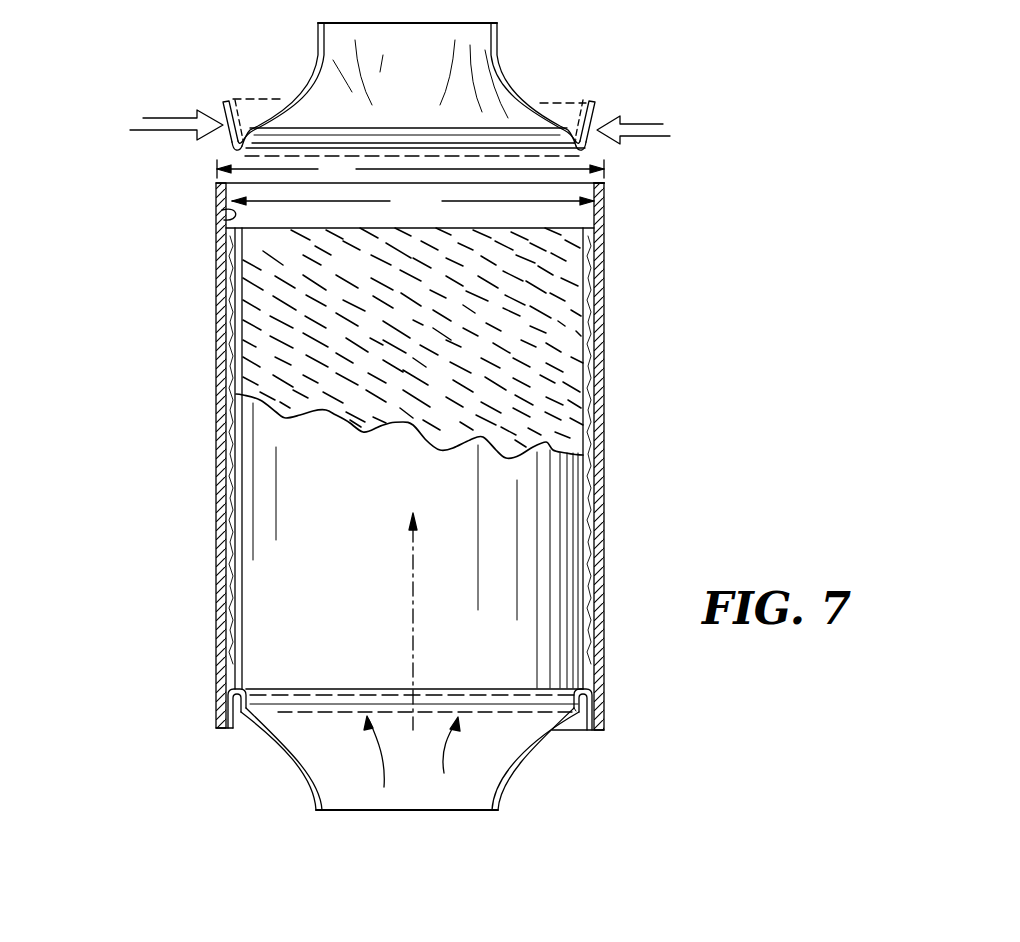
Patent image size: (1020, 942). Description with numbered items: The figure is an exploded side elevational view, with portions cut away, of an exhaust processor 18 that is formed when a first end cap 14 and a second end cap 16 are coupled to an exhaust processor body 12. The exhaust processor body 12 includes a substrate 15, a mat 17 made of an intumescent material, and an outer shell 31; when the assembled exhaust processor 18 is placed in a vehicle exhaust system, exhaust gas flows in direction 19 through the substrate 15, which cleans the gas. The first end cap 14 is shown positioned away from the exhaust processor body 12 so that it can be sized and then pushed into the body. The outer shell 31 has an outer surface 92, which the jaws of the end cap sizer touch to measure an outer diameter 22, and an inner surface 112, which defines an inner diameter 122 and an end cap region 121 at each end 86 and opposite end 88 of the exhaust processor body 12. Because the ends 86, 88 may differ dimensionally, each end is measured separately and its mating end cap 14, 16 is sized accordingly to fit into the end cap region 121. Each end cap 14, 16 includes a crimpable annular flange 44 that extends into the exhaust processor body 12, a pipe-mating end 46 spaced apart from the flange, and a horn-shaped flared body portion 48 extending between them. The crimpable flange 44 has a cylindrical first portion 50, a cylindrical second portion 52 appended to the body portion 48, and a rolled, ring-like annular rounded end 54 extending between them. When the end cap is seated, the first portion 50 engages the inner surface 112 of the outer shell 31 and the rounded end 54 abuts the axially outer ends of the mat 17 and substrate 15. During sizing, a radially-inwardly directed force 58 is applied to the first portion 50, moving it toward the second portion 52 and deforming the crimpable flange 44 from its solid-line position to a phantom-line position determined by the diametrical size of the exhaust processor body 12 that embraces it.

The exhaust processor body 12 is at (630, 379).
The first end cap 14 is at (557, 78).
The substrate 15 is at (556, 418).
The second end cap 16 is at (282, 764).
The mat 17 is at (226, 505).
The exhaust processor 18 is at (152, 571).
The direction of exhaust gas flow 19 is at (418, 630).
The outer diameter 22 is at (410, 170).
The outer shell 31 is at (545, 564).
The crimpable annular flange 44 is at (603, 141).
The pipe-mating end 46 is at (498, 23).
The flared body portion 48 is at (307, 78).
The first portion 50 is at (225, 106).
The second portion 52 is at (256, 137).
The annular rounded end 54 is at (238, 152).
The radially-inwardly directed force 58 is at (167, 120).
The end 86 is at (605, 200).
The opposite end 88 is at (216, 718).
The outer surface 92 is at (606, 297).
The inner surface 112 is at (222, 210).
The end cap region 121 is at (292, 212).
The inner diameter 122 is at (413, 203).